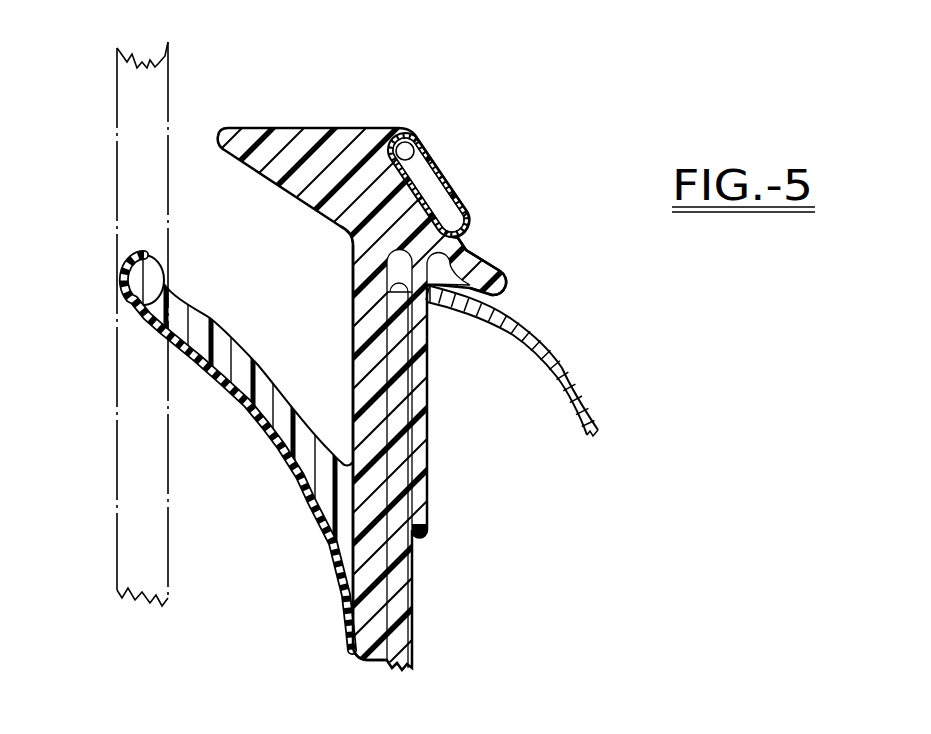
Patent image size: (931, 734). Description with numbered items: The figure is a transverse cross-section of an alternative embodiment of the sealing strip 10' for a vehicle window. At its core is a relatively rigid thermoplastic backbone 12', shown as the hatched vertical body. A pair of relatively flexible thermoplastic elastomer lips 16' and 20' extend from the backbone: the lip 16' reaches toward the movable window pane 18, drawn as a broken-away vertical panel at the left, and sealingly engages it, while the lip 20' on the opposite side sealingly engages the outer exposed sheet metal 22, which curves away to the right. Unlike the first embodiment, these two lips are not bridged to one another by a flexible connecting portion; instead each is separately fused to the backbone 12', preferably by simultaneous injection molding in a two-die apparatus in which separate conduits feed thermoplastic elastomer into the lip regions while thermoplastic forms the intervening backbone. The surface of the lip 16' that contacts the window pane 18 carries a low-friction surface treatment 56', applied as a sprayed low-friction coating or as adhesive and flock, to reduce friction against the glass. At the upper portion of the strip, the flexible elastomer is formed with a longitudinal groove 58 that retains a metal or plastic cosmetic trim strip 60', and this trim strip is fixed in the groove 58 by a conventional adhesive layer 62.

The sealing strip 10' is at (465, 355).
The thermoplastic backbone 12' is at (326, 452).
The flexible thermoplastic elastomer lip 16' is at (238, 460).
The movable window pane 18 is at (128, 218).
The flexible thermoplastic elastomer lip 20' is at (519, 264).
The outer exposed sheet metal 22 is at (574, 368).
The low-friction surface treatment 56' is at (238, 452).
The groove 58 is at (464, 200).
The cosmetic trim strip 60' is at (461, 179).
The adhesive layer 62 is at (418, 142).